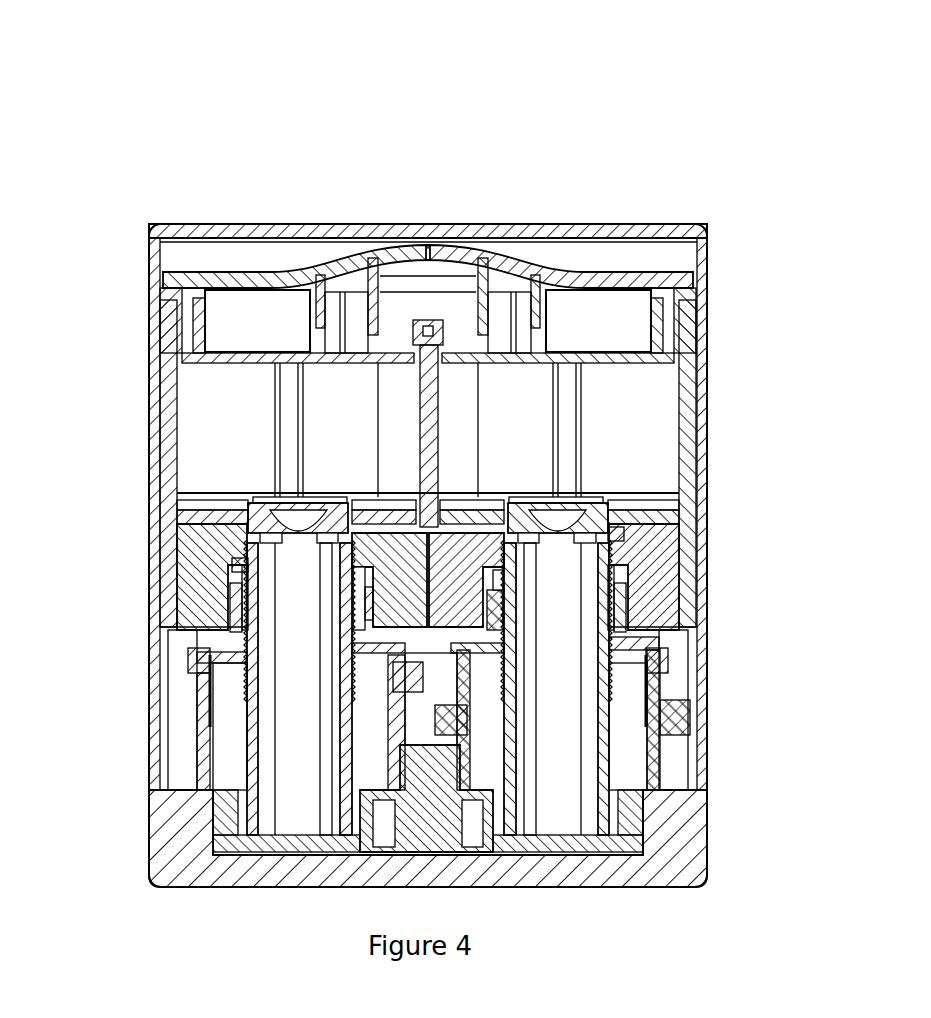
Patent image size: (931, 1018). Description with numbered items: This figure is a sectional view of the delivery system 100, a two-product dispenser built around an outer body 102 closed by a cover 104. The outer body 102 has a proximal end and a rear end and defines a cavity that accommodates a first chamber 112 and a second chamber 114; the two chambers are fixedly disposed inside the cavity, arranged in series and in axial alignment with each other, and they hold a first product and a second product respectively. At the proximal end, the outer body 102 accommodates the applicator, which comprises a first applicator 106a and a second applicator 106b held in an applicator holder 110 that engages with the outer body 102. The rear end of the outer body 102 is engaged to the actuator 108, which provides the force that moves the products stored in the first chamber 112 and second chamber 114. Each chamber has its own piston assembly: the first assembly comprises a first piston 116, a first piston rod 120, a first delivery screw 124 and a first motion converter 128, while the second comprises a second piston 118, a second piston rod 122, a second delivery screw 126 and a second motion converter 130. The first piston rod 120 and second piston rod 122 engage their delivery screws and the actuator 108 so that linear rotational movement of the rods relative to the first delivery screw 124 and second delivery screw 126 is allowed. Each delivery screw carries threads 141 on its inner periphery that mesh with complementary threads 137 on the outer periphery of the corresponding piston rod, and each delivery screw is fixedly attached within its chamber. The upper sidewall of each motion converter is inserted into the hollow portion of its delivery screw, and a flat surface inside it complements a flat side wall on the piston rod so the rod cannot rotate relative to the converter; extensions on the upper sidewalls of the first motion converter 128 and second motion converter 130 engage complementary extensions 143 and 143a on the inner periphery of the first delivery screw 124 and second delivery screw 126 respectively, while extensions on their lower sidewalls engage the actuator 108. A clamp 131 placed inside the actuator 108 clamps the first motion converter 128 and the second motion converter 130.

The delivery system 100 is at (200, 130).
The outer body 102 is at (710, 535).
The cover 104 is at (506, 224).
The first applicator 106a is at (237, 275).
The second applicator 106b is at (605, 275).
The actuator 108 is at (660, 887).
The applicator holder 110 is at (632, 305).
The first chamber 112 is at (205, 420).
The second chamber 114 is at (628, 390).
The first piston 116 is at (215, 493).
The second piston 118 is at (635, 493).
The first piston rod 120 is at (295, 590).
The second piston rod 122 is at (563, 613).
The first delivery screw 124 is at (187, 548).
The second delivery screw 126 is at (652, 565).
The first motion converter 128 is at (225, 697).
The second motion converter 130 is at (647, 707).
The clamp 131 is at (627, 807).
The threads 137 is at (246, 677).
The threads 141 is at (233, 560).
The extensions 143 is at (233, 597).
The extensions 143a is at (633, 613).